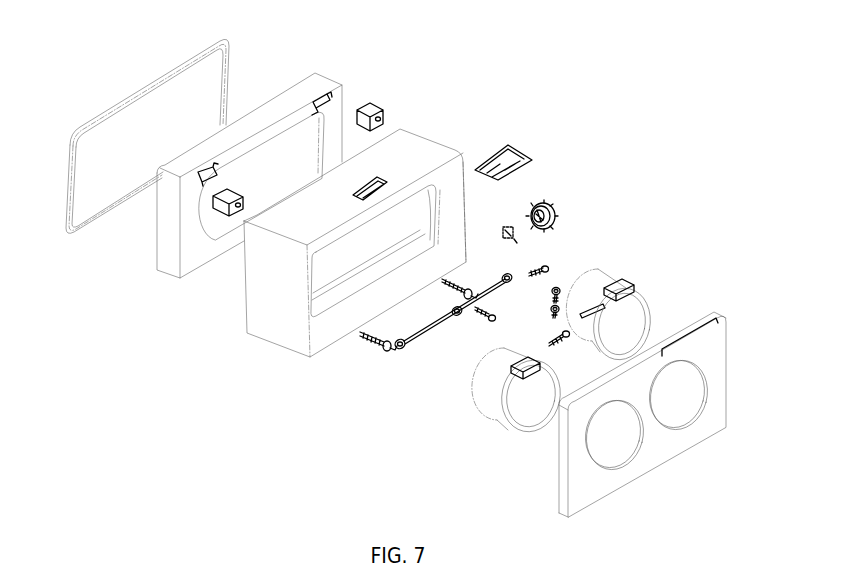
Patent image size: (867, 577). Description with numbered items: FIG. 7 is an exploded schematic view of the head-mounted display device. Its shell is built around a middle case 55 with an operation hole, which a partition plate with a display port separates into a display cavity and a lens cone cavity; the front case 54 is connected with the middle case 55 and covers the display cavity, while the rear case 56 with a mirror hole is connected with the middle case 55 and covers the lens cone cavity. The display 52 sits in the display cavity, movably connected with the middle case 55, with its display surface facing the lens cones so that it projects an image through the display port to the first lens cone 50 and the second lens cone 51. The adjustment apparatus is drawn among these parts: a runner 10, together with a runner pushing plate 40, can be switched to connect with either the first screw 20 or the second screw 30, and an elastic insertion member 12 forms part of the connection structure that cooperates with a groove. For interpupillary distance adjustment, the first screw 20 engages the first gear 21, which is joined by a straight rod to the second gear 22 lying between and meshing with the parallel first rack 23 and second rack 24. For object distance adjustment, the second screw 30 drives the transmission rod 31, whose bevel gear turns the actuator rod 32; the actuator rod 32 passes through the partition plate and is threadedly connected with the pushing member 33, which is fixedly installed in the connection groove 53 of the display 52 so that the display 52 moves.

The runner 10 is at (548, 203).
The elastic insertion member 12 is at (507, 227).
The first screw 20 is at (541, 268).
The first gear 21 is at (558, 290).
The second gear 22 is at (549, 312).
The first rack 23 is at (592, 320).
The second rack 24 is at (547, 343).
The second screw 30 is at (487, 315).
The transmission rod 31 is at (430, 330).
The actuator rod 32 is at (384, 352).
The pushing member 33 is at (372, 103).
The runner pushing plate 40 is at (517, 153).
The first lens cone 50 is at (482, 418).
The second lens cone 51 is at (611, 277).
The display 52 is at (317, 75).
The connection groove 53 is at (198, 182).
The front case 54 is at (233, 55).
The middle case 55 is at (420, 132).
The rear case 56 is at (705, 320).